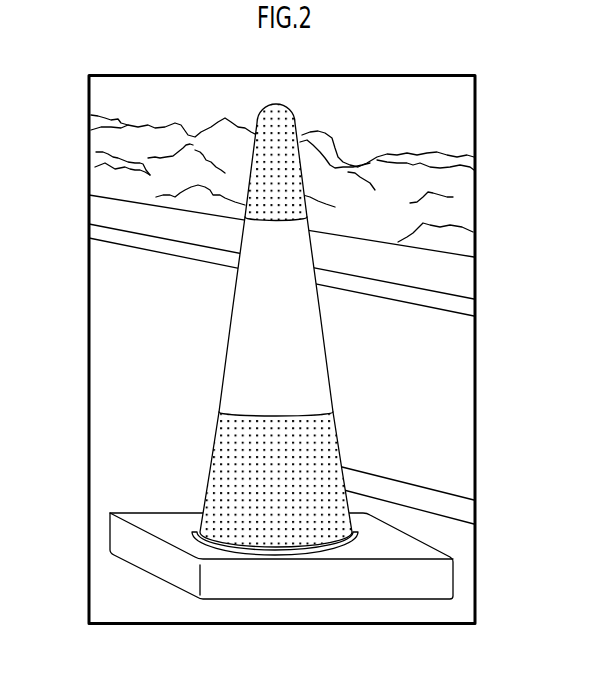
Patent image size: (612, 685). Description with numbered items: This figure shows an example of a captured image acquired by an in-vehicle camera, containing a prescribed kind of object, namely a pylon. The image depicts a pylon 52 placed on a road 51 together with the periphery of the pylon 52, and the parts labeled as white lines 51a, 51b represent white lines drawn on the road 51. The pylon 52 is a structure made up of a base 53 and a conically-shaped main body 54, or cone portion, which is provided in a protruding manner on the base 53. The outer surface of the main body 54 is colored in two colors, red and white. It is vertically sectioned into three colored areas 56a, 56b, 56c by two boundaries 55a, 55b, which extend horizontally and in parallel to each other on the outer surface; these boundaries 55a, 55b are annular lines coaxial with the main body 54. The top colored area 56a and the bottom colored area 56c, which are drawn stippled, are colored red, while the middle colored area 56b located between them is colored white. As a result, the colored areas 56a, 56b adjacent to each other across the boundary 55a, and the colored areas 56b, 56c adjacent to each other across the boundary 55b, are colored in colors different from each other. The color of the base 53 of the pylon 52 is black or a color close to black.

The road 51 is at (98, 330).
The white line 51a is at (123, 243).
The white line 51b is at (445, 503).
The pylon 52 is at (225, 327).
The base 53 is at (243, 583).
The main body 54 is at (323, 330).
The boundary 55a is at (268, 220).
The boundary 55b is at (268, 413).
The top colored area 56a is at (283, 135).
The middle colored area 56b is at (308, 370).
The bottom colored area 56c is at (315, 465).